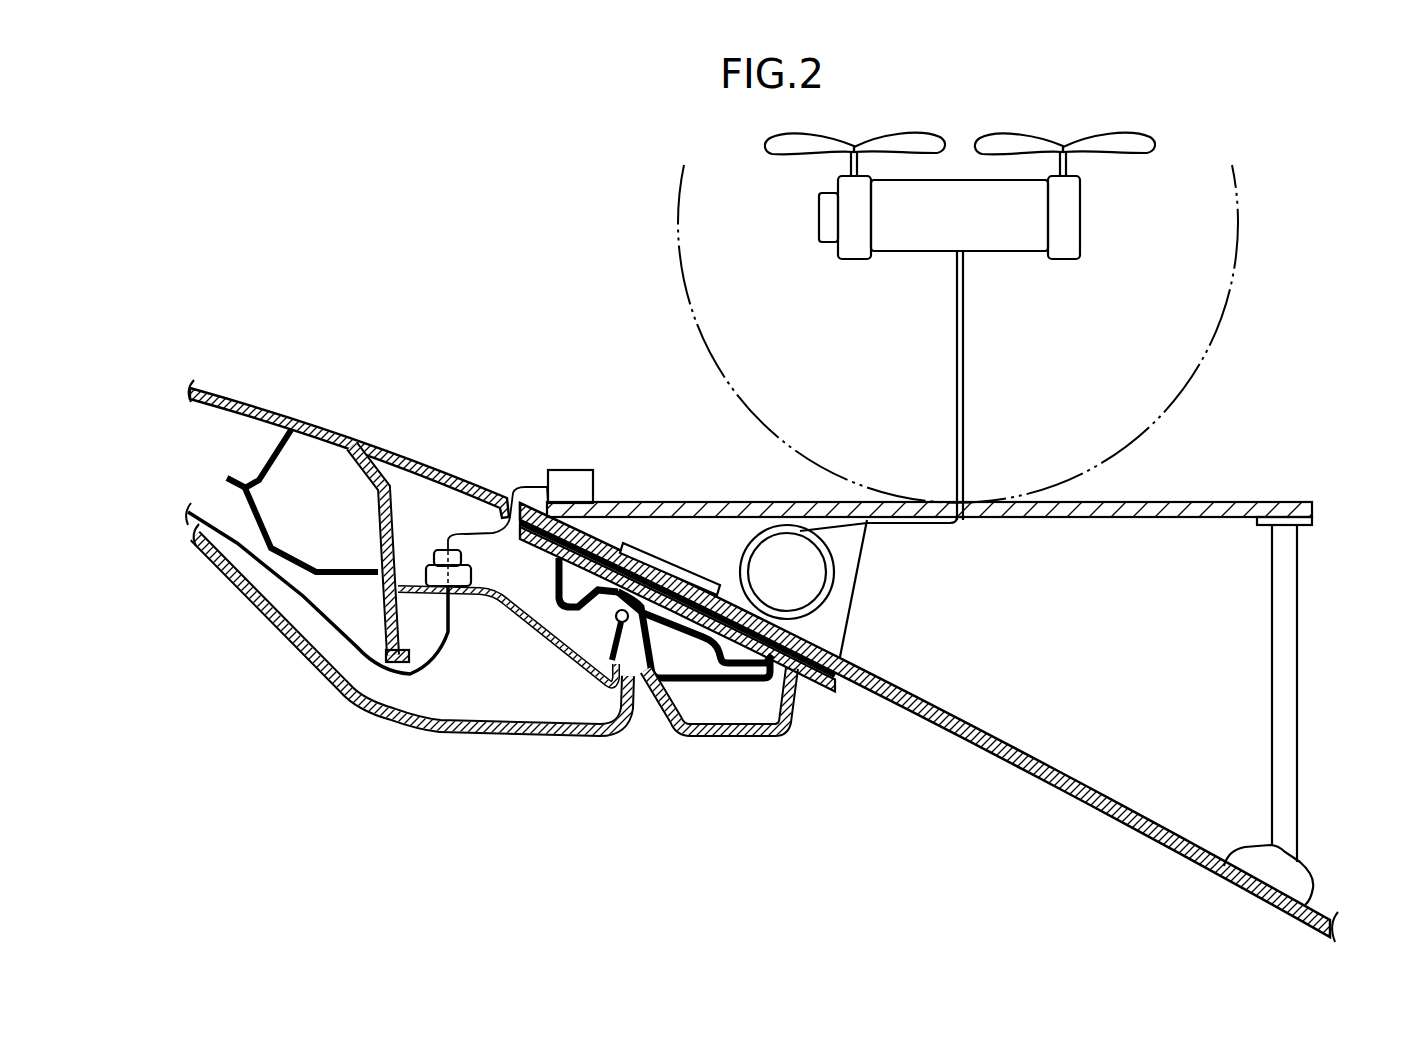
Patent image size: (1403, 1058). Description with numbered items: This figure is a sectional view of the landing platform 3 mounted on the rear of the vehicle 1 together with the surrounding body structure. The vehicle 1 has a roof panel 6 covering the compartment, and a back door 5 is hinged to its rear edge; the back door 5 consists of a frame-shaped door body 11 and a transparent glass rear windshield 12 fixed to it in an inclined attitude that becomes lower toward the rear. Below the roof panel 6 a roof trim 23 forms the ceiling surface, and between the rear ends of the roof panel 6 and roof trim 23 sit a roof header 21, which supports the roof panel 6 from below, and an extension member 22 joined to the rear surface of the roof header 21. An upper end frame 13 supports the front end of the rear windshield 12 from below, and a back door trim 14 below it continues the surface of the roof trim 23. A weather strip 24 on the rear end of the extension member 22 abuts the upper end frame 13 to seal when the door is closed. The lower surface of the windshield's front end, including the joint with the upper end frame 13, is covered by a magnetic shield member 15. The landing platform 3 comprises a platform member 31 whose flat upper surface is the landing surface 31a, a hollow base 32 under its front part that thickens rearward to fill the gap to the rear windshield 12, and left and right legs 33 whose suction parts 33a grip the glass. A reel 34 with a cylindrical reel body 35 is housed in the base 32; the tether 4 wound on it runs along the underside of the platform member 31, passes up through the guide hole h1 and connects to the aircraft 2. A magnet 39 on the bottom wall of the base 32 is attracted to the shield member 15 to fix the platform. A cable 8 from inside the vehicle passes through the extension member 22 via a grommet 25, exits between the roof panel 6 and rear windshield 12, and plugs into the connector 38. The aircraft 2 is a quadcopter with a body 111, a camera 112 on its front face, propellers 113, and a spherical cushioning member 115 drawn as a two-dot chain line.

The vehicle 1 is at (262, 342).
The aircraft 2 is at (655, 184).
The landing platform 3 is at (1290, 488).
The tether 4 is at (963, 384).
The back door 5 is at (1058, 756).
The roof panel 6 is at (370, 448).
The cable 8 is at (431, 671).
The door body 11 is at (672, 701).
The rear windshield 12 is at (997, 758).
The upper end frame 13 is at (702, 692).
The back door trim 14 is at (757, 738).
The shield member 15 is at (820, 677).
The roof header 21 is at (252, 452).
The extension member 22 is at (527, 634).
The roof trim 23 is at (382, 710).
The weather strip 24 is at (608, 642).
The grommet 25 is at (440, 550).
The platform member 31 is at (1078, 518).
The landing surface 31a is at (1180, 502).
The base 32 is at (853, 608).
The leg 33 is at (1272, 662).
The suction part 33a is at (1240, 850).
The reel 34 is at (753, 516).
The reel body 35 is at (743, 553).
The connector 38 is at (565, 472).
The magnet 39 is at (670, 548).
The body 111 is at (1010, 246).
The camera 112 is at (818, 218).
The propeller 113 is at (787, 162).
The cushioning member 115 is at (1245, 258).
The guide hole h1 is at (963, 525).